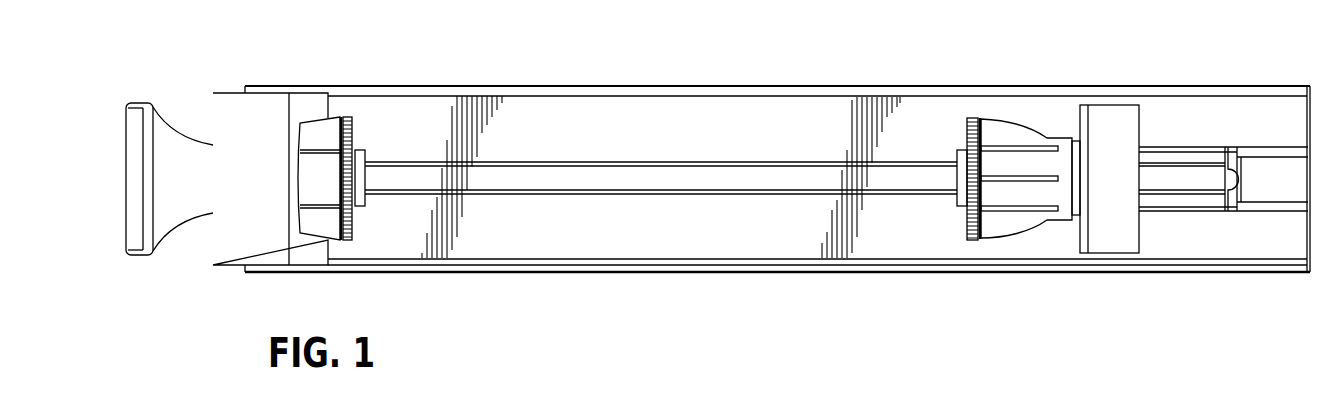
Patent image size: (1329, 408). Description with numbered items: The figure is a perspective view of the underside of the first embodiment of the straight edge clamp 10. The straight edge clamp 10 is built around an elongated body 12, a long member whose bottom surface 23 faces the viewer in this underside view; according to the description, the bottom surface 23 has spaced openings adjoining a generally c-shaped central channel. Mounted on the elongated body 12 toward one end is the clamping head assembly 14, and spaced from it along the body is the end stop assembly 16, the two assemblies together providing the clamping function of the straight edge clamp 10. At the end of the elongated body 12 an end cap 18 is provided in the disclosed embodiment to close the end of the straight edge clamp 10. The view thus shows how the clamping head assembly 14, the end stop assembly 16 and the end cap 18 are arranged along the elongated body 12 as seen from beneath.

The straight edge clamp 10 is at (661, 234).
The elongated body 12 is at (748, 112).
The clamping head assembly 14 is at (357, 125).
The end stop assembly 16 is at (967, 245).
The end cap 18 is at (1267, 205).
The bottom surface 23 is at (577, 112).